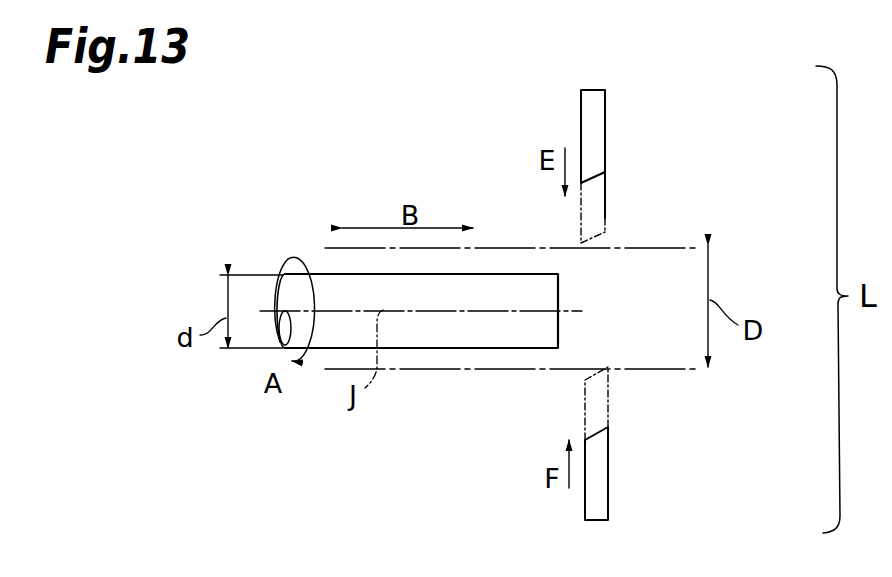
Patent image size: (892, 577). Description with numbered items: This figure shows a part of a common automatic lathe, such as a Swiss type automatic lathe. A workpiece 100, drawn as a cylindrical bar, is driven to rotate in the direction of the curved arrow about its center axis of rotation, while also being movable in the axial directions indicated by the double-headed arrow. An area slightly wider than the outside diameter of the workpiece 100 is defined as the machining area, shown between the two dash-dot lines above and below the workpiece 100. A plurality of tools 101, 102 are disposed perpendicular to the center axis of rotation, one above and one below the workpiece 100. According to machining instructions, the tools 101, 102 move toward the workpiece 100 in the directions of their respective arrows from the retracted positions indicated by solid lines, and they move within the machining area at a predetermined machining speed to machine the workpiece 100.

The workpiece 100 is at (445, 333).
The tool 101 is at (594, 136).
The tool 102 is at (600, 482).